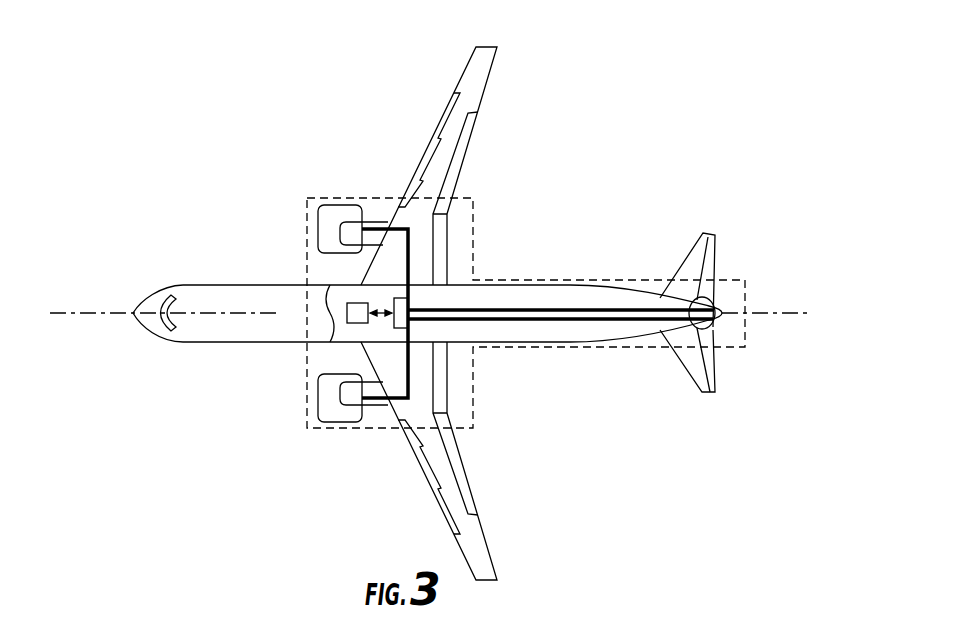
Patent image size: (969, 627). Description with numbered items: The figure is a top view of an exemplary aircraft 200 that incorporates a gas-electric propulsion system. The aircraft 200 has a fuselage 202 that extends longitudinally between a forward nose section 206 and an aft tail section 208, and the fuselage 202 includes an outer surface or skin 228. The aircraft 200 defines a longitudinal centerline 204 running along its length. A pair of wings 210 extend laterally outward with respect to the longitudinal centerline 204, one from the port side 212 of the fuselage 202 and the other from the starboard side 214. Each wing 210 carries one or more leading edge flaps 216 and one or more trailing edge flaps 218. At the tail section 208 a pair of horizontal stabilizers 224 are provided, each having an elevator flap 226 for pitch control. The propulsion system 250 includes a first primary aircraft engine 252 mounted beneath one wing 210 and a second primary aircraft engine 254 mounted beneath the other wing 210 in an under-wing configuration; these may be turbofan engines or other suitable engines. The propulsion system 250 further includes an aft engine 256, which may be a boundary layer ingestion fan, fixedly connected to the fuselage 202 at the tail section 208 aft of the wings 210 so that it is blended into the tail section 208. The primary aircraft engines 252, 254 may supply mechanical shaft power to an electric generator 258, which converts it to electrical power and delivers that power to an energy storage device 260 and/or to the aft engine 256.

The aircraft 200 is at (433, 313).
The fuselage 202 is at (182, 330).
The longitudinal centerline 204 is at (70, 313).
The nose section 206 is at (134, 321).
The tail section 208 is at (710, 327).
The wings 210 is at (455, 313).
The port side 212 is at (253, 345).
The starboard side 214 is at (248, 284).
The leading edge flaps 216 is at (418, 470).
The trailing edge flaps 218 is at (465, 473).
The horizontal stabilizers 224 is at (697, 253).
The elevator flap 226 is at (720, 250).
The outer surface or skin 228 is at (556, 325).
The propulsion system 250 is at (510, 279).
The first primary aircraft engine 252 is at (335, 421).
The second primary aircraft engine 254 is at (335, 212).
The aft engine 256 is at (714, 287).
The electric generator 258 is at (410, 302).
The energy storage device 260 is at (346, 326).